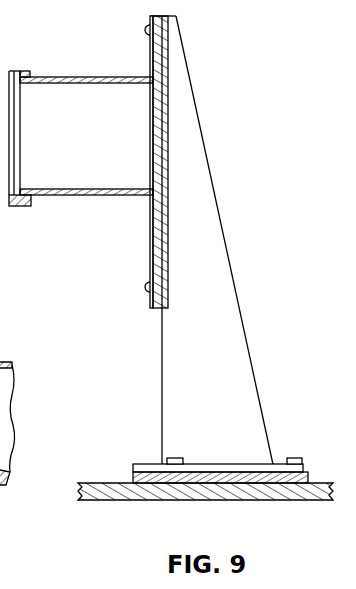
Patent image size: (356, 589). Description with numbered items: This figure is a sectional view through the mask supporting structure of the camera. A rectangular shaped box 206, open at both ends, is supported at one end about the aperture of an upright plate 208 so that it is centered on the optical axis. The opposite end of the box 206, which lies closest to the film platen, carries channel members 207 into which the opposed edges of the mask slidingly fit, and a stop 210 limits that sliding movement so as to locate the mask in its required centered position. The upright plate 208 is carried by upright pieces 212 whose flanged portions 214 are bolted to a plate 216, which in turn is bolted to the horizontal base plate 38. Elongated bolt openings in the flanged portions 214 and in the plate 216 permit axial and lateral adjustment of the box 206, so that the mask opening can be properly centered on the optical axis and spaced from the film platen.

The horizontal base plate 38 is at (278, 495).
The rectangular shaped box 206 is at (110, 195).
The channel members 207 is at (17, 71).
The upright plate 208 is at (157, 250).
The stop 210 is at (12, 206).
The upright pieces 212 is at (221, 263).
The flanged portions 214 is at (257, 465).
The plate 216 is at (160, 482).